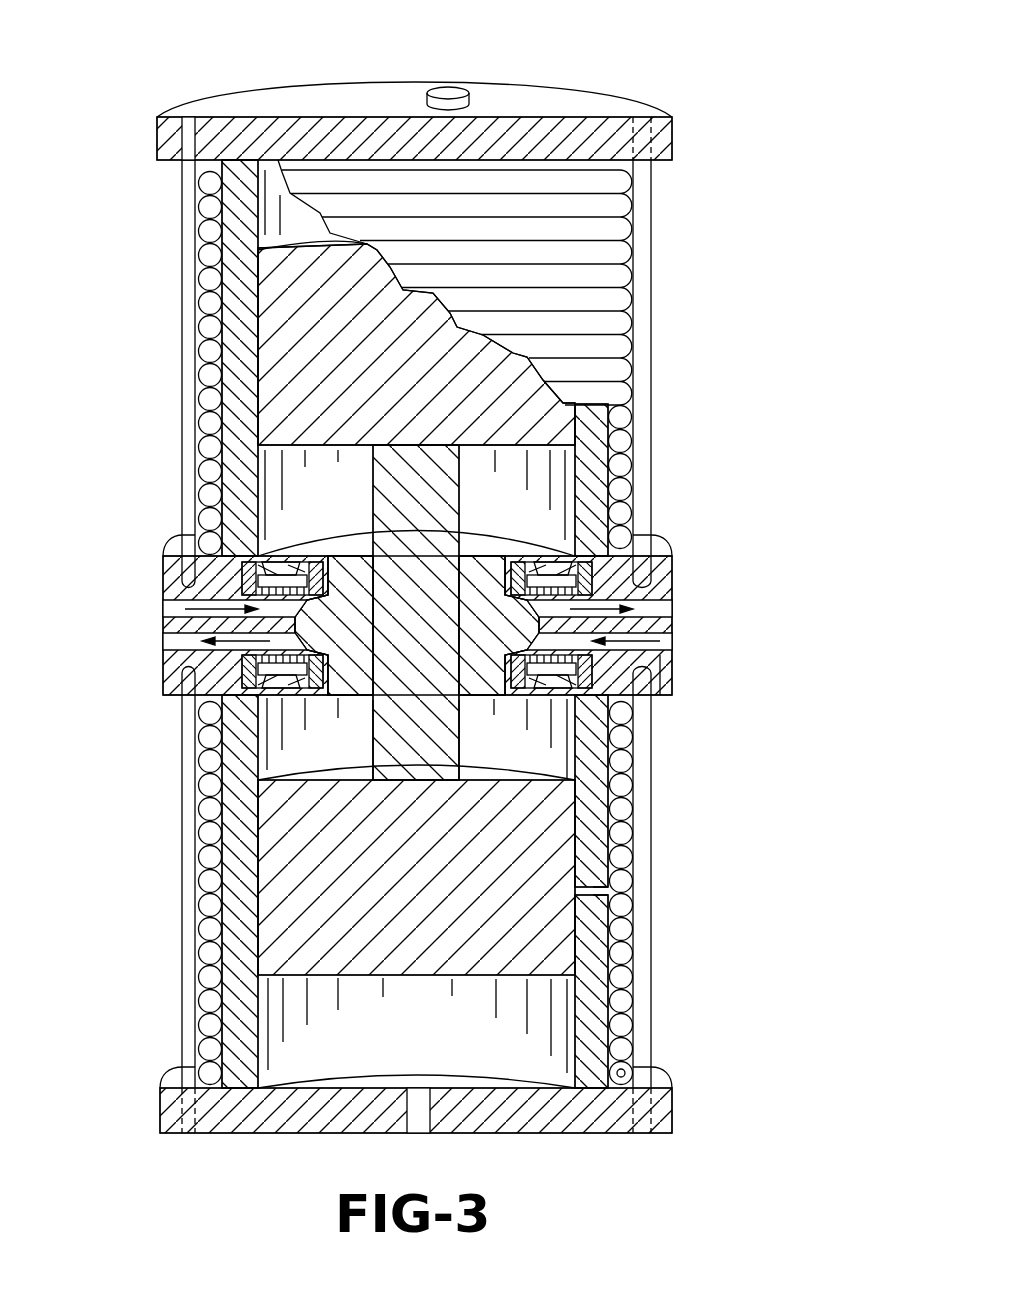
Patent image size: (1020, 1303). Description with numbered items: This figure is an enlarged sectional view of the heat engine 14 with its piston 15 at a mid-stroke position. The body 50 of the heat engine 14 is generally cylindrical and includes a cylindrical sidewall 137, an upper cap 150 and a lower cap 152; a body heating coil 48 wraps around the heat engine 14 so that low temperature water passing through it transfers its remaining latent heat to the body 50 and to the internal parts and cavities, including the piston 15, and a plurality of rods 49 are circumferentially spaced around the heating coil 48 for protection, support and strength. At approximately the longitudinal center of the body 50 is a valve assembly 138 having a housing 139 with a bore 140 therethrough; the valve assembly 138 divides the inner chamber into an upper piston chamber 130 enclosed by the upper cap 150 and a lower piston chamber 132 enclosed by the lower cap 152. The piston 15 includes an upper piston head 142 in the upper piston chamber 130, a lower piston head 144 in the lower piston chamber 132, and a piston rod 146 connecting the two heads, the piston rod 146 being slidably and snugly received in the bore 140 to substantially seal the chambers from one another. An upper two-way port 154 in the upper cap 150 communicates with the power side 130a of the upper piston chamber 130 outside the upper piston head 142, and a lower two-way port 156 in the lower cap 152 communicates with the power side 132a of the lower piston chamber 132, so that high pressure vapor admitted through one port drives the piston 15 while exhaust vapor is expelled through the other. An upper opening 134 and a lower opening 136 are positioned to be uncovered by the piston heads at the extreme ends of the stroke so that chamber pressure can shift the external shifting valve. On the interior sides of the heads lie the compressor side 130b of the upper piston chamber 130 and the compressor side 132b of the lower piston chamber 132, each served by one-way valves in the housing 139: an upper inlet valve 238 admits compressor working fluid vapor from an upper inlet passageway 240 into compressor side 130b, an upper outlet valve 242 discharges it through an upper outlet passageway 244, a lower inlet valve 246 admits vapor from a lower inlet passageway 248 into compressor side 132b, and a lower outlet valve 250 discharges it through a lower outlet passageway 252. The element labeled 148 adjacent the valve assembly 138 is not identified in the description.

The heat engine 14 is at (603, 30).
The piston 15 is at (385, 735).
The body heating coil 48 is at (617, 270).
The rods 49 is at (640, 340).
The body 50 is at (678, 110).
The upper piston chamber 130 is at (565, 468).
The power side of upper piston chamber 130a is at (272, 222).
The compressor side of upper piston chamber 130b is at (362, 499).
The lower piston chamber 132 is at (535, 1020).
The power side of lower piston chamber 132a is at (445, 1042).
The compressor side of lower piston chamber 132b is at (538, 755).
The upper opening 134 is at (242, 355).
The lower opening 136 is at (615, 900).
The cylindrical sidewall 137 is at (592, 793).
The valve assembly 138 is at (694, 563).
The housing 139 is at (680, 672).
The bore 140 is at (340, 586).
The upper piston head 142 is at (372, 380).
The lower piston head 144 is at (433, 908).
The piston rod 146 is at (443, 632).
The hub 148 is at (480, 555).
The upper cap 150 is at (242, 100).
The lower cap 152 is at (660, 1083).
The upper two-way port 154 is at (437, 88).
The lower two-way port 156 is at (418, 1122).
The upper inlet valve 238 is at (230, 565).
The upper inlet passageway 240 is at (152, 608).
The upper outlet valve 242 is at (606, 575).
The upper outlet passageway 244 is at (683, 608).
The lower inlet valve 246 is at (612, 683).
The lower inlet passageway 248 is at (683, 640).
The lower outlet valve 250 is at (233, 691).
The lower outlet passageway 252 is at (152, 640).